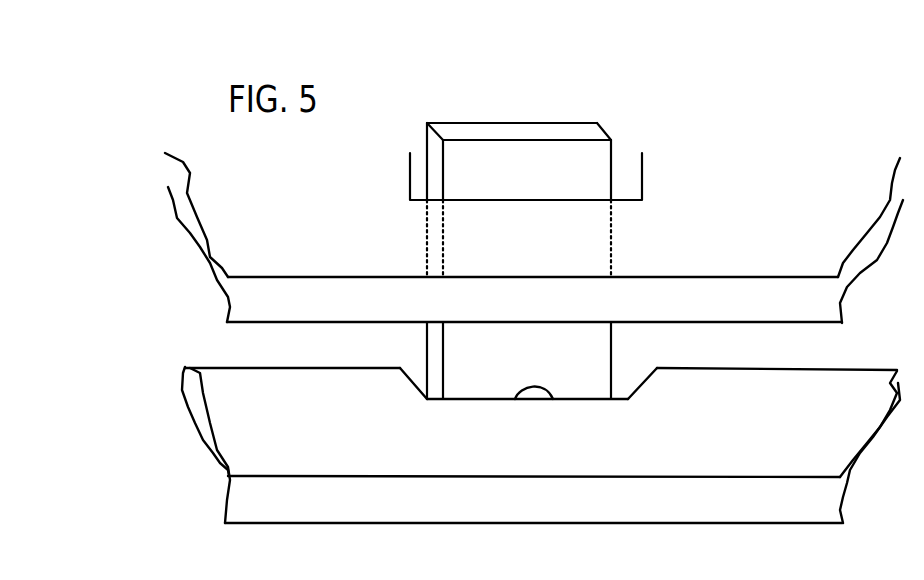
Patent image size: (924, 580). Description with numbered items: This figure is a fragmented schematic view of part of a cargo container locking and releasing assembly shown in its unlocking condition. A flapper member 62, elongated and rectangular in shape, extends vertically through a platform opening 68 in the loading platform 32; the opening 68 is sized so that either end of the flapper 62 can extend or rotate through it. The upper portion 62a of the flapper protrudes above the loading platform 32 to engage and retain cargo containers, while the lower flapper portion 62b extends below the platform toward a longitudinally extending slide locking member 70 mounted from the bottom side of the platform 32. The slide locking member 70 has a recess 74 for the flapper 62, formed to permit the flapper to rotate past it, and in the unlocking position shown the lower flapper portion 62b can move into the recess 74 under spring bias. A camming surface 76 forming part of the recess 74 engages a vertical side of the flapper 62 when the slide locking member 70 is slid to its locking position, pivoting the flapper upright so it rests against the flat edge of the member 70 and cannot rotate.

The loading platform 32 is at (745, 248).
The slide locking member 70 is at (748, 436).
The flapper member 62 is at (560, 241).
The upper portion of the flapper 62a is at (559, 147).
The lower flapper portion 62b is at (592, 383).
The platform opening 68 is at (645, 183).
The recess 74 is at (520, 397).
The camming surface 76 is at (403, 382).